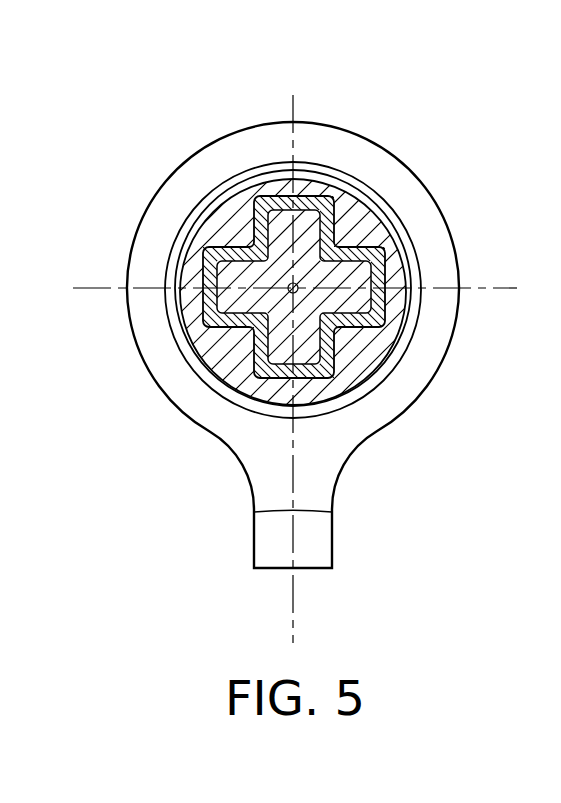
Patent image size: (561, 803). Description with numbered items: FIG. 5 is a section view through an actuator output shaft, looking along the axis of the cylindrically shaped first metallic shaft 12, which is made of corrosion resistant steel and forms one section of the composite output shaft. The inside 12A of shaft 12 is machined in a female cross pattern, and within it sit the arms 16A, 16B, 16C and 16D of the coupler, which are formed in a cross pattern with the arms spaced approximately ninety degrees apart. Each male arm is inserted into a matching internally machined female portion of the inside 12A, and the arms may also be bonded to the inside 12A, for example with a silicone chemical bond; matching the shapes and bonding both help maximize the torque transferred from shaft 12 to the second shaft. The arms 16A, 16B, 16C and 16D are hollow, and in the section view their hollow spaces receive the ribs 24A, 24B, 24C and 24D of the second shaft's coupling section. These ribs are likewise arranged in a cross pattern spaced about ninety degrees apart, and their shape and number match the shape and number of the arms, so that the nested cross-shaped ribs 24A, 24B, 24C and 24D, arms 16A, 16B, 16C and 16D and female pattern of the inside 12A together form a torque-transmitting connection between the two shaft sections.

The first metallic shaft 12 is at (256, 163).
The inside of shaft 12A is at (223, 225).
The arm 16A is at (310, 200).
The arm 16B is at (205, 280).
The arm 16C is at (300, 378).
The arm 16D is at (378, 277).
The rib 24A is at (302, 225).
The rib 24B is at (218, 301).
The rib 24C is at (280, 343).
The rib 24D is at (372, 300).